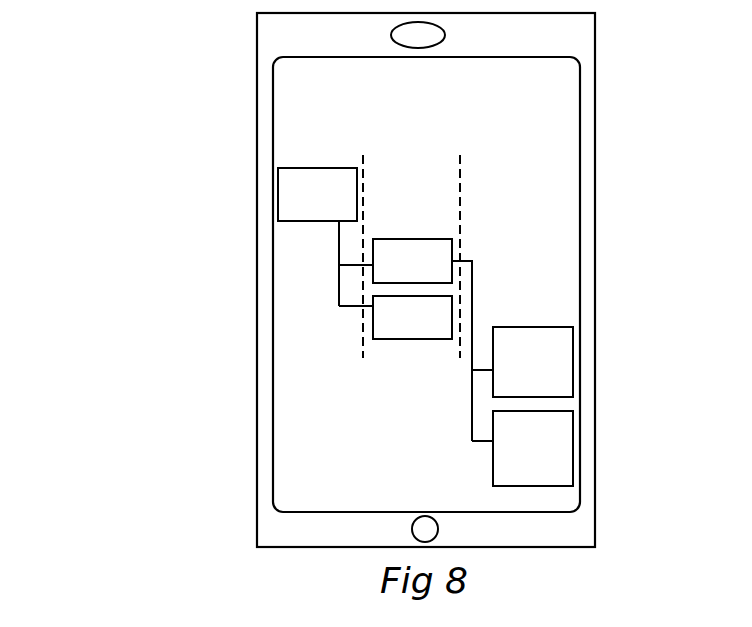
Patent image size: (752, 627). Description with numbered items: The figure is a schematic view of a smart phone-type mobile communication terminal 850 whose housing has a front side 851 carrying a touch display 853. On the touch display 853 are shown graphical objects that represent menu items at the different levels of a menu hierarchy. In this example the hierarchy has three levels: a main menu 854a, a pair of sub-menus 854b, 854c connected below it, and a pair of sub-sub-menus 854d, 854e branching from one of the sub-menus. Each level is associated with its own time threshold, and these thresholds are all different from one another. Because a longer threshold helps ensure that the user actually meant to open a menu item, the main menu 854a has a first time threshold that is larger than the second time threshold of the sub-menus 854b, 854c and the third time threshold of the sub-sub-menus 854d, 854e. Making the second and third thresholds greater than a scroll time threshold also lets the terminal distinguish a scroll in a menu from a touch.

The mobile device with menu interface 850 is at (122, 56).
The device housing 851 is at (273, 52).
The display screen 853 is at (273, 110).
The main menu 854a is at (278, 215).
The sub-menu 854b is at (449, 251).
The sub-menu 854c is at (443, 315).
The sub-sub-menu 854d is at (558, 352).
The sub-sub-menu 854e is at (558, 443).